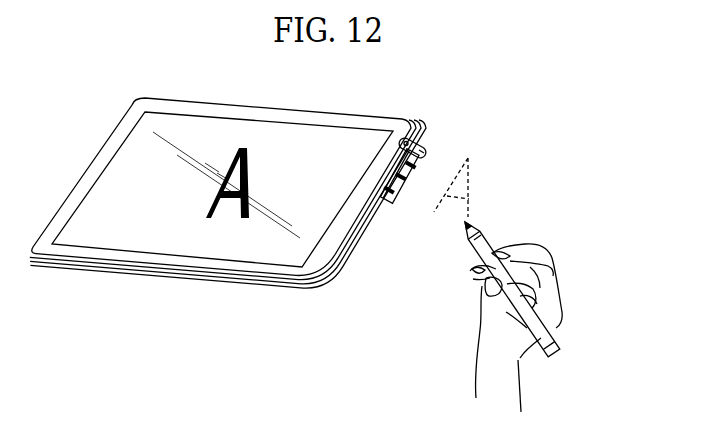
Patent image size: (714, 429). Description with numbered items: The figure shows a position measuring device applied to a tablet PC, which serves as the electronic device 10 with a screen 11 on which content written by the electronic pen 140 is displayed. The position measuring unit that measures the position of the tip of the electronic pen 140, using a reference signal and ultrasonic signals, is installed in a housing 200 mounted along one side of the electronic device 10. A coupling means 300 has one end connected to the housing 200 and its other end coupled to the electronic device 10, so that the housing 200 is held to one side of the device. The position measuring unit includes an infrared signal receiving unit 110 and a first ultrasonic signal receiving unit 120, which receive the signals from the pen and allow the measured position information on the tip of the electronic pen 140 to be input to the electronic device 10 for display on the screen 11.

The electronic device 10 is at (199, 263).
The screen 11 is at (166, 240).
The infrared signal receiving unit 110 is at (413, 195).
The first ultrasonic signal receiving unit 120 is at (402, 198).
The electronic pen 140 is at (549, 331).
The housing 200 is at (425, 153).
The coupling means 300 is at (420, 133).